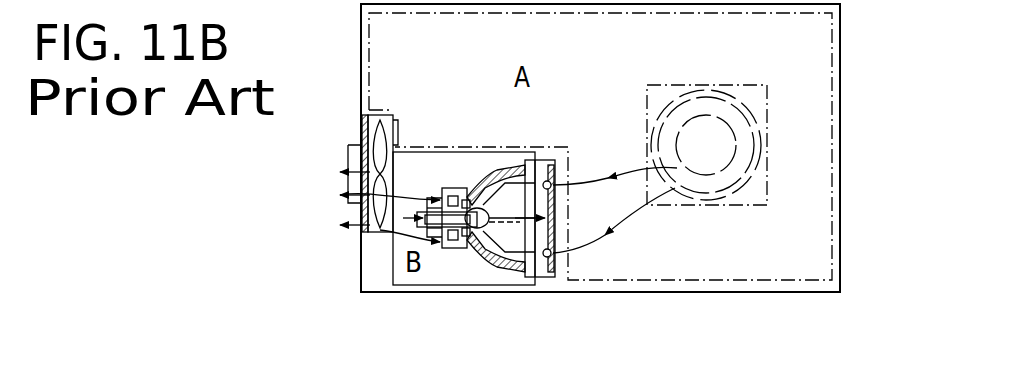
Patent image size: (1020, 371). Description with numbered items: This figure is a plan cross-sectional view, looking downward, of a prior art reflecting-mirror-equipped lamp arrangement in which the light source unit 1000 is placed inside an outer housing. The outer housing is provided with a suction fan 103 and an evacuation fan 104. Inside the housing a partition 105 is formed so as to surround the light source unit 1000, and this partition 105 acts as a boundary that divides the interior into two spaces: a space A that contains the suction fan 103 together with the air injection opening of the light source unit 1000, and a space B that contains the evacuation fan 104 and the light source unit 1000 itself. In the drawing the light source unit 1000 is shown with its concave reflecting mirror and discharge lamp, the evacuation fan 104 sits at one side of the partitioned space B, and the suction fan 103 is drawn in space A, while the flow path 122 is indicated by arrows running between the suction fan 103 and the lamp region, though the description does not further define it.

The suction fan 103 is at (767, 117).
The evacuation fan 104 is at (362, 138).
The partition 105 is at (425, 286).
The cooling air flow 122 is at (556, 212).
The light source unit 1000 is at (487, 268).